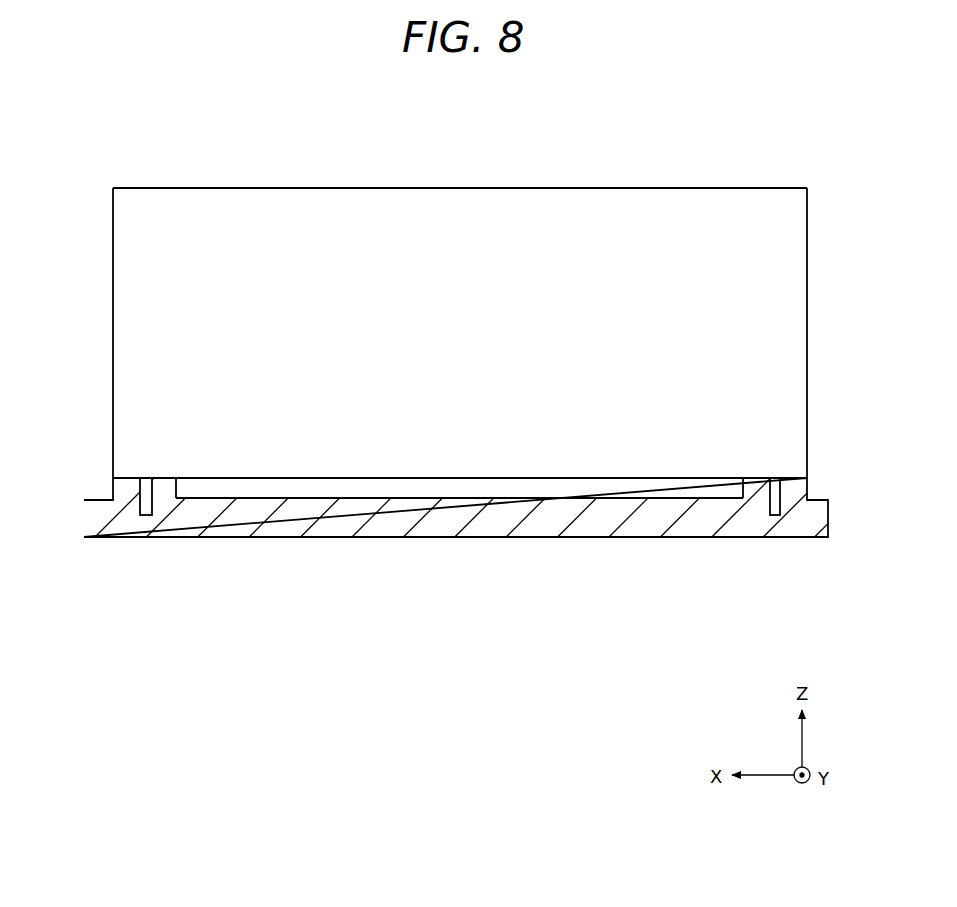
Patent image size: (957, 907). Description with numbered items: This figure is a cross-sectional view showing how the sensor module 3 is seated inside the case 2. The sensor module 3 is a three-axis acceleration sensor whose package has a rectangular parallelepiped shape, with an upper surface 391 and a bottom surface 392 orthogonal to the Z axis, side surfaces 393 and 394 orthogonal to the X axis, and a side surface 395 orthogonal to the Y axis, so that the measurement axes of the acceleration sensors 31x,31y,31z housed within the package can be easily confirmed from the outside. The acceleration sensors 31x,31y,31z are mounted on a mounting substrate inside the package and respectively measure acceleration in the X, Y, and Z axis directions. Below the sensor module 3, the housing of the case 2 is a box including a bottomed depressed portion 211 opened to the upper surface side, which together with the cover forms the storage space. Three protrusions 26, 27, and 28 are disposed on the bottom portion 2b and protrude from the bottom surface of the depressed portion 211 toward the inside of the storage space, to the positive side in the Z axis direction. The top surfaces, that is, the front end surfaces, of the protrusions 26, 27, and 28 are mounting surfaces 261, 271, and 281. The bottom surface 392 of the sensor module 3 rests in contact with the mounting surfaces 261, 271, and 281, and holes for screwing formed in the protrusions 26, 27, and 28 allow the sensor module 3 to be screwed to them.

The case 2 is at (456, 550).
The bottom portion 2b is at (477, 528).
The sensor module 3 is at (460, 285).
The protrusion 26 is at (162, 490).
The protrusion 27 is at (795, 492).
The protrusion 28 is at (545, 487).
The depressed portion 211 is at (313, 498).
The mounting surface 261 is at (133, 478).
The mounting surface 271 is at (765, 478).
The mounting surface 281 is at (400, 478).
The upper surface 391 is at (336, 188).
The bottom surface 392 is at (449, 482).
The side surface 393 is at (113, 331).
The side surface 394 is at (807, 338).
The side surface 395 is at (460, 291).
The acceleration sensors 31x,31y,31z is at (676, 225).